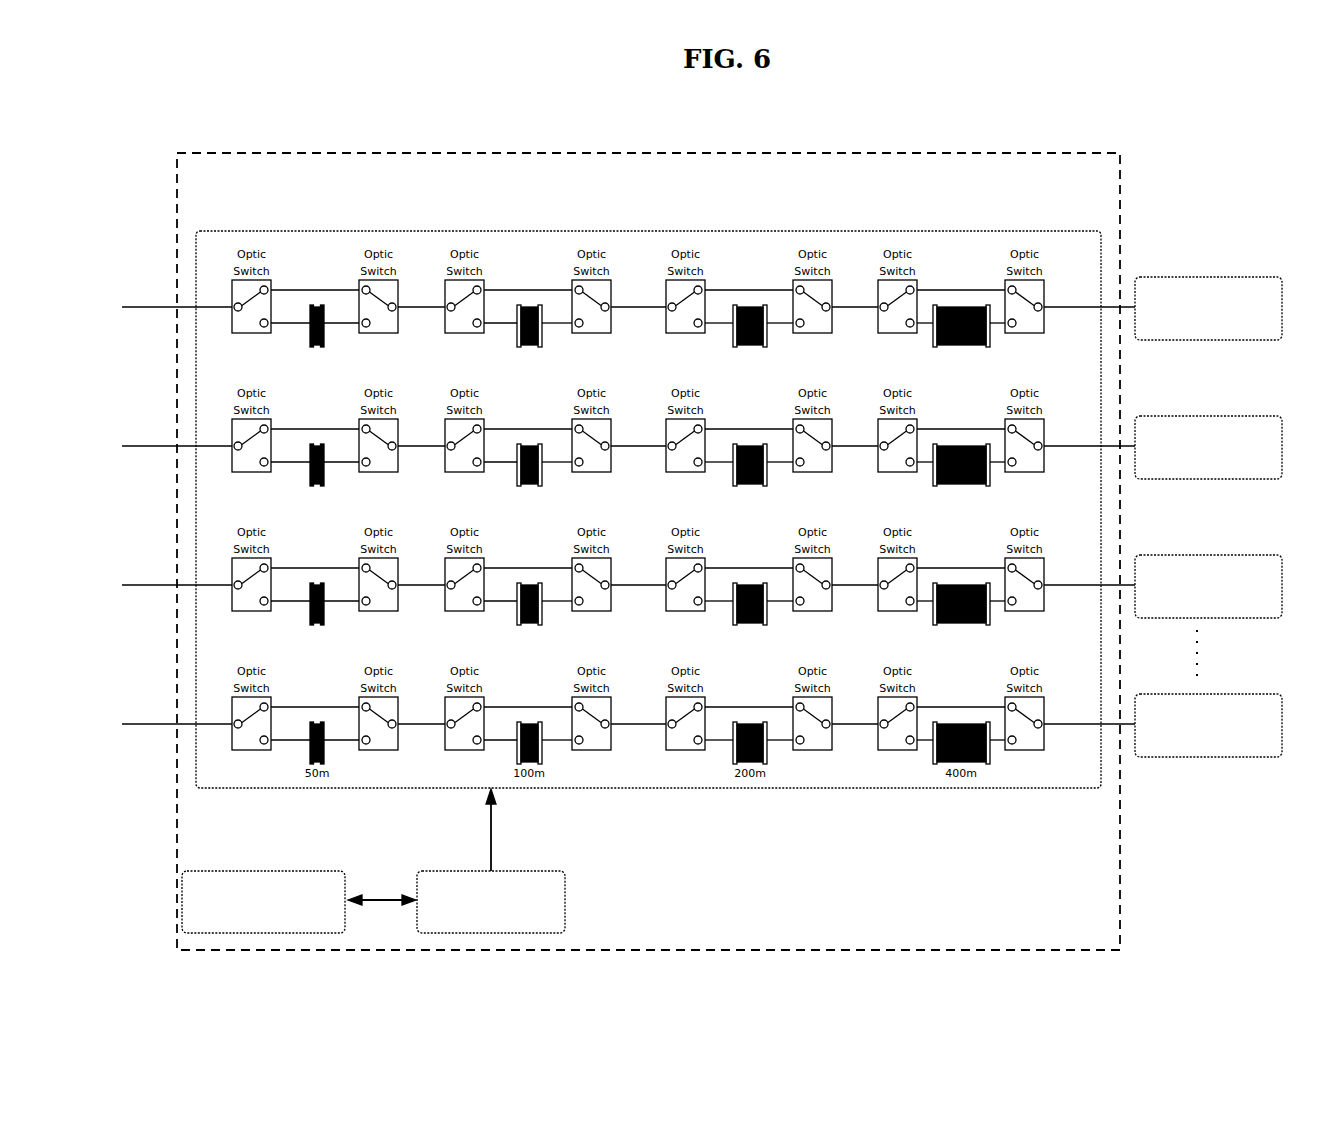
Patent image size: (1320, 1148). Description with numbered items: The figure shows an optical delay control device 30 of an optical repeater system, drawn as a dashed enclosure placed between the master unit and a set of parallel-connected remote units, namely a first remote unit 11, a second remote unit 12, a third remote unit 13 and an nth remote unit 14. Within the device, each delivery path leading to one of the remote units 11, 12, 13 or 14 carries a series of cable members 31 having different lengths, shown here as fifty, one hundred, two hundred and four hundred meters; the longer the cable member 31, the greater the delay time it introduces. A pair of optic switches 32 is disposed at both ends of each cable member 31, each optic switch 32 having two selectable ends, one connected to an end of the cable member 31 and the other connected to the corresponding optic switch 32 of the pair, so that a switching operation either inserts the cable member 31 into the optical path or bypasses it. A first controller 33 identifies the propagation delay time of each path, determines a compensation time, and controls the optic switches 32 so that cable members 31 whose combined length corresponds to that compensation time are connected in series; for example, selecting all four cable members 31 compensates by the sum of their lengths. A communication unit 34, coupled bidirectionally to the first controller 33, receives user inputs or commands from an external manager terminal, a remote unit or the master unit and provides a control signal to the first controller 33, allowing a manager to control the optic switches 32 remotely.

The optical delay control device 30 is at (808, 152).
The cable member 31 is at (532, 297).
The optic switch 32 is at (279, 277).
The first controller 33 is at (529, 870).
The communication unit 34 is at (273, 870).
The first remote unit 11 is at (1225, 276).
The second remote unit 12 is at (1225, 415).
The third remote unit 13 is at (1224, 553).
The nth remote unit 14 is at (1235, 692).